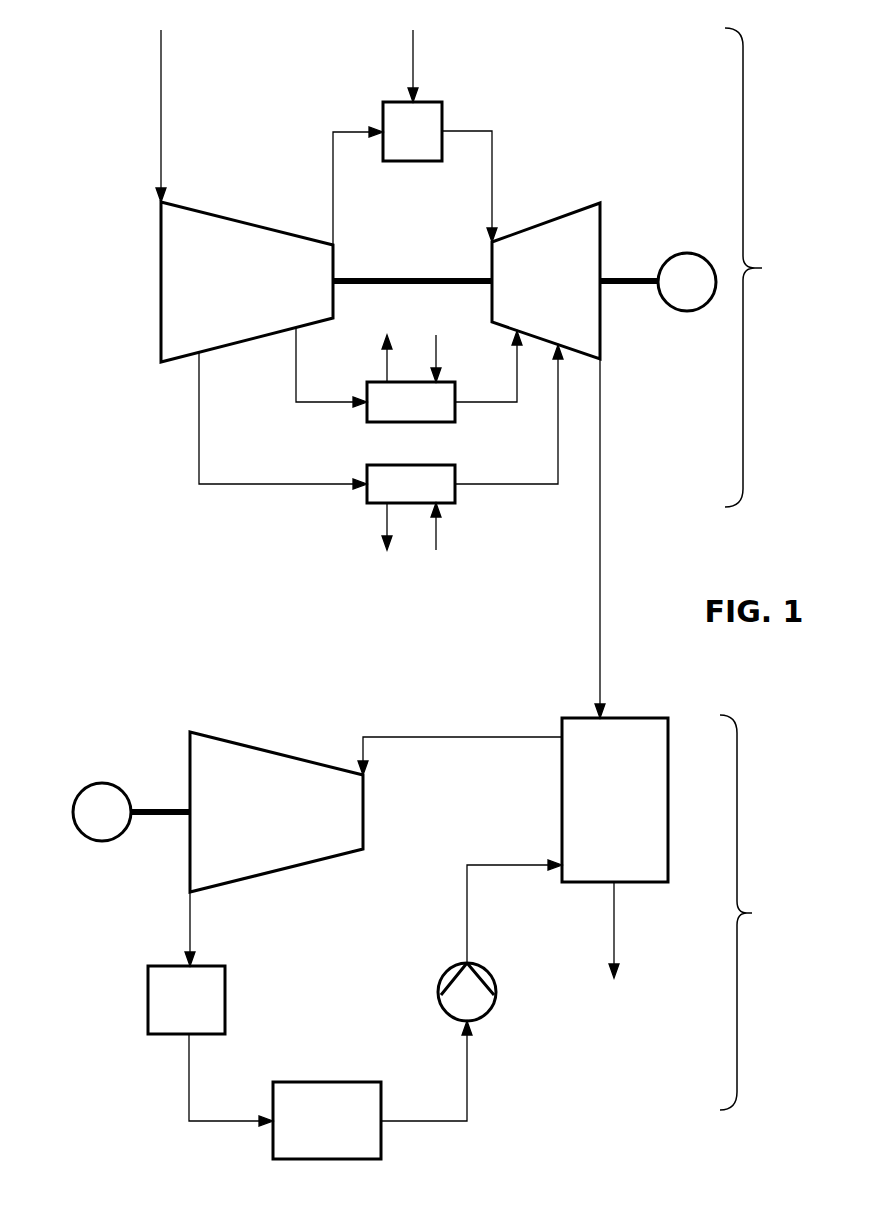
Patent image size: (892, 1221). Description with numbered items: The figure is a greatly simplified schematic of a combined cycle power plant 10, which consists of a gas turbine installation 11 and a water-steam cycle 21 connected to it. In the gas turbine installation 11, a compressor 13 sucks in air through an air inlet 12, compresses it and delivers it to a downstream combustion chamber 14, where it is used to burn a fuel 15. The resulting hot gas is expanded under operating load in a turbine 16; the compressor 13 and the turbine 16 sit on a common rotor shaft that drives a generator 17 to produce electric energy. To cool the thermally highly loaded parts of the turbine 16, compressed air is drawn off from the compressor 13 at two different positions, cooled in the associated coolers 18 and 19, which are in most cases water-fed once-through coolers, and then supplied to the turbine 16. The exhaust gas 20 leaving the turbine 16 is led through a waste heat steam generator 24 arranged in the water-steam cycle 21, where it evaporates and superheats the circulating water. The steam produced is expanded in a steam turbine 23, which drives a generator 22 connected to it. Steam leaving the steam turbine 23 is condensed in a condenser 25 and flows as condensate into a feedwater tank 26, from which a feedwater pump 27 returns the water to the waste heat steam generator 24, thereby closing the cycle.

The combined cycle power plant 10 is at (181, 628).
The gas turbine installation 11 is at (762, 267).
The air inlet 12 is at (162, 59).
The compressor 13 is at (226, 293).
The combustion chamber 14 is at (396, 145).
The fuel 15 is at (413, 60).
The turbine 16 is at (529, 293).
The generator 17 is at (687, 268).
The cooler 18 is at (393, 485).
The cooler 19 is at (430, 402).
The exhaust gas 20 is at (601, 409).
The water-steam cycle 21 is at (754, 912).
The generator 22 is at (102, 800).
The steam turbine 23 is at (254, 827).
The waste heat steam generator 24 is at (598, 815).
The condenser 25 is at (171, 1013).
The feedwater tank 26 is at (309, 1135).
The feedwater pump 27 is at (469, 1000).